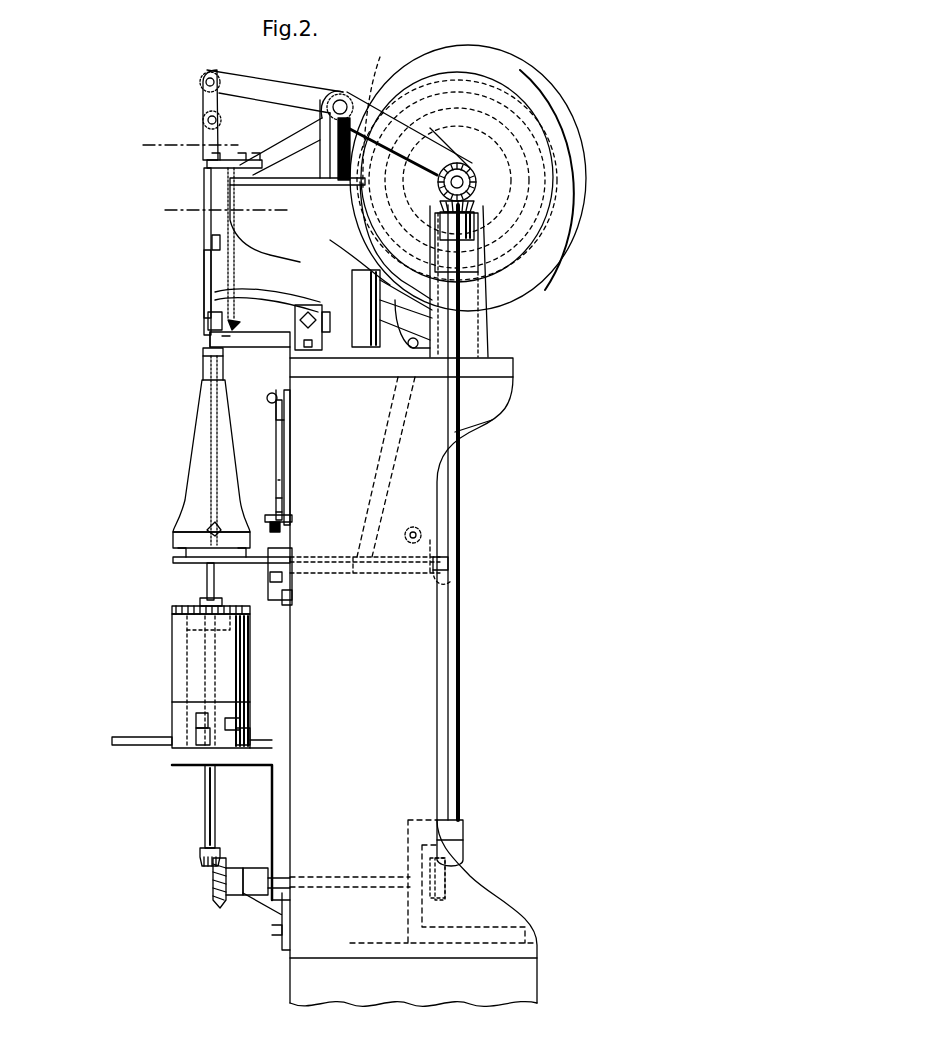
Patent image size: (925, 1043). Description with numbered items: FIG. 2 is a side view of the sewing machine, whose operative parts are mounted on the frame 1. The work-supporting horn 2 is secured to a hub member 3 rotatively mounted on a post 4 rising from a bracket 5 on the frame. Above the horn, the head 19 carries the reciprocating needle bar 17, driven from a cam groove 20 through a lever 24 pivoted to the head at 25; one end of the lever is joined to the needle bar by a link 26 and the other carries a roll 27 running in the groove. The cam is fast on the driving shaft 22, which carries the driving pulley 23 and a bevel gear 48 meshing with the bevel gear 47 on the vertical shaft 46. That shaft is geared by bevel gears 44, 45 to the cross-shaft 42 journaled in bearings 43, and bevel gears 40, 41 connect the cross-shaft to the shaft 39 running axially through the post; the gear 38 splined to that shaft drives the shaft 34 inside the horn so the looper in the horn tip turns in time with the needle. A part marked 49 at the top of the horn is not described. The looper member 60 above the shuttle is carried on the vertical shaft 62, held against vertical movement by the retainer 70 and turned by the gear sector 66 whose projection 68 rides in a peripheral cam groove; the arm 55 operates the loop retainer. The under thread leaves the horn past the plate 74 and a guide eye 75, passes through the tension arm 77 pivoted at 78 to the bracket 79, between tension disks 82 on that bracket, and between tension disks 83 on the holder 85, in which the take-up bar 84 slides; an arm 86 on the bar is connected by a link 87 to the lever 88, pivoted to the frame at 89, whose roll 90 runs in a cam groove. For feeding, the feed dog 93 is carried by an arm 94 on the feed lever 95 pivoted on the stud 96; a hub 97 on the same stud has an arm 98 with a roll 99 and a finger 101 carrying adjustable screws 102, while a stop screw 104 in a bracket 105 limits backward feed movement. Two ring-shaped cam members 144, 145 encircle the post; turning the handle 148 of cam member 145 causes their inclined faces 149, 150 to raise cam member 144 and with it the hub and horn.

The frame 1 is at (452, 463).
The horn 2 is at (203, 368).
The hub member 3 is at (172, 670).
The post 4 is at (192, 145).
The bracket 5 is at (160, 790).
The needle bar 17 is at (203, 133).
The head 19 is at (204, 183).
The cam groove 20 is at (545, 150).
The driving shaft 22 is at (470, 170).
The driving pulley 23 is at (517, 63).
The lever 24 is at (280, 92).
The pivot 25 is at (340, 100).
The link 26 is at (209, 98).
The roll 27 is at (520, 94).
The shaft 34 is at (207, 578).
The gear 38 is at (172, 610).
The shaft 39 is at (205, 818).
The bevel gear 40 is at (200, 860).
The bevel gear 41 is at (213, 885).
The cross-shaft 42 is at (280, 890).
The bearings 43 is at (253, 866).
The bevel gear 44 is at (450, 875).
The bevel gear 45 is at (467, 857).
The vertically-extending shaft 46 is at (460, 660).
The bevel gear 47 is at (474, 205).
The bevel gear 48 is at (470, 179).
The cap 49 is at (203, 352).
The arm 55 is at (204, 280).
The looper member 60 is at (234, 318).
The shaft 62 is at (234, 310).
The gear sector 66 is at (306, 185).
The projection 68 is at (381, 75).
The retainer 70 is at (207, 165).
The plate 74 is at (205, 476).
The guide eye 75 is at (208, 532).
The tension arm 77 is at (276, 449).
The pivot 78 is at (270, 397).
The bracket 79 is at (290, 431).
The tension disks 82 is at (285, 520).
The tension disks 83 is at (420, 530).
The take-up bar 84 is at (200, 560).
The holder 85 is at (290, 577).
The arm 86 is at (440, 560).
The link 87 is at (450, 583).
The lever 88 is at (400, 420).
The pivot 89 is at (420, 343).
The roll 90 is at (335, 198).
The feed dog 93 is at (210, 340).
The arm 94 is at (208, 320).
The feed lever 95 is at (262, 348).
The stud 96 is at (372, 282).
The hub 97 is at (356, 288).
The arm 98 is at (360, 200).
The roll 99 is at (488, 305).
The finger 101 is at (328, 334).
The adjustable screws 102 is at (322, 350).
The stop screw 104 is at (312, 314).
The bracket 105 is at (312, 300).
The cam member 144 is at (172, 705).
The cam member 145 is at (255, 742).
The handle 148 is at (130, 745).
The inclined face 149 is at (196, 718).
The inclined face 150 is at (200, 740).